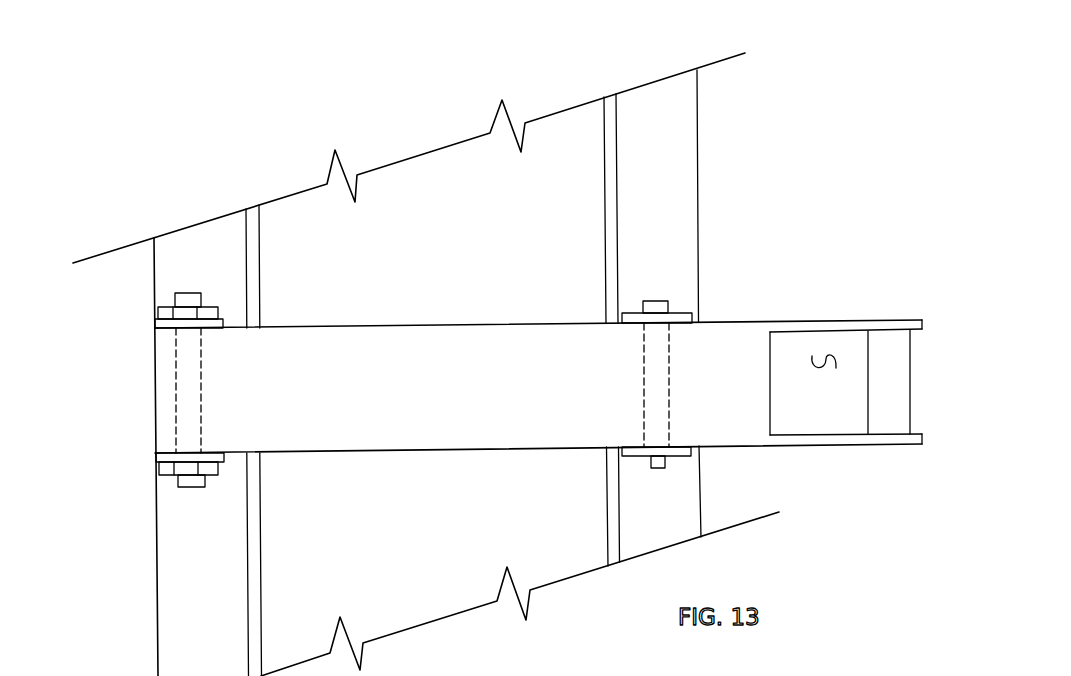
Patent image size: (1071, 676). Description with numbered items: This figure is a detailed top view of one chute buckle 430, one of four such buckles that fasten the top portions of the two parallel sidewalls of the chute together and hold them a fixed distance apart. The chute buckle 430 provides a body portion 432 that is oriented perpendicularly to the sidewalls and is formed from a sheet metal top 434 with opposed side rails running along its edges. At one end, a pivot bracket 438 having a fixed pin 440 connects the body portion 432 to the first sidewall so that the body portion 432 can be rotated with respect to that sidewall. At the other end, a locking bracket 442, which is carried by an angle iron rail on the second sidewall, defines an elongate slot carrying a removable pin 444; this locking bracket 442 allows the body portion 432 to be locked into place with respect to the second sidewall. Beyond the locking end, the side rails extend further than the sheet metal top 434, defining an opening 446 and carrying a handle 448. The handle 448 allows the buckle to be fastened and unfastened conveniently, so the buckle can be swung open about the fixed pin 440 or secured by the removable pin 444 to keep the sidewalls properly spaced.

The chute buckle 430 is at (318, 258).
The body portion 432 is at (465, 287).
The sheet metal top 434 is at (450, 398).
The pivot bracket 438 is at (155, 358).
The fixed pin 440 is at (170, 285).
The locking bracket 442 is at (635, 457).
The removable pin 444 is at (673, 295).
The opening 446 is at (822, 358).
The handle 448 is at (883, 392).